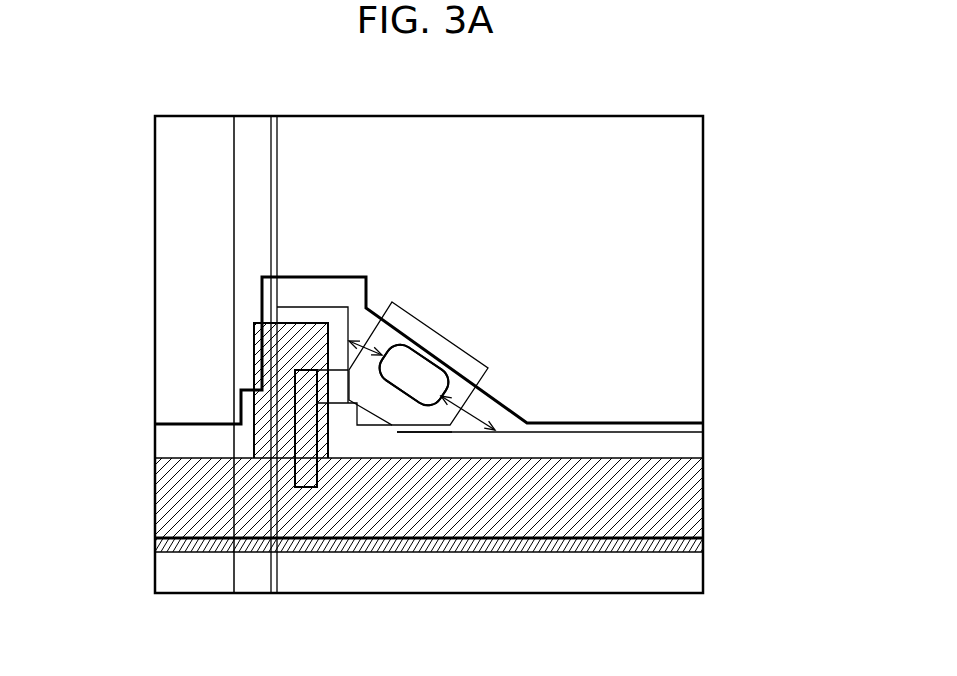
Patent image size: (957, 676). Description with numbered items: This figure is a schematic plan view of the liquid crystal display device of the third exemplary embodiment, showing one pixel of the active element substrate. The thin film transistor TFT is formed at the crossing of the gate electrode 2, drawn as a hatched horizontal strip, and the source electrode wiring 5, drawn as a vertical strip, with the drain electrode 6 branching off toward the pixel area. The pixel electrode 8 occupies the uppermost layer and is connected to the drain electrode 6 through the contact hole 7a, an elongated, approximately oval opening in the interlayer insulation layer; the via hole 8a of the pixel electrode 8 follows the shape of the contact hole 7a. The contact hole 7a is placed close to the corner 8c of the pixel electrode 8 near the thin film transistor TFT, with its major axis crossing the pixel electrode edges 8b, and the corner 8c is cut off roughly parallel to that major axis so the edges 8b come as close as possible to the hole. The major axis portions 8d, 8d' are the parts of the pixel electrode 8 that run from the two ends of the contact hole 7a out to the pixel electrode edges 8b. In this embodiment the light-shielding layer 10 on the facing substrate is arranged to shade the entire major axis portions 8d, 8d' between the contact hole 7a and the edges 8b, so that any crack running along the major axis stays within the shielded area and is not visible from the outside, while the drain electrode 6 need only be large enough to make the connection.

The gate electrode 2 is at (660, 500).
The source electrode wiring 5 is at (250, 240).
The drain electrode 6 is at (389, 300).
The contact hole 7a is at (426, 370).
The pixel electrode 8 is at (653, 303).
The via hole 8a is at (428, 368).
The pixel electrode edge 8b is at (348, 353).
The corner of pixel electrode 8c is at (397, 433).
The major axis portion 8d is at (351, 273).
The major axis portion 8d' is at (508, 394).
The light-shielding layer 10 is at (662, 417).
The thin film transistor TFT is at (327, 432).